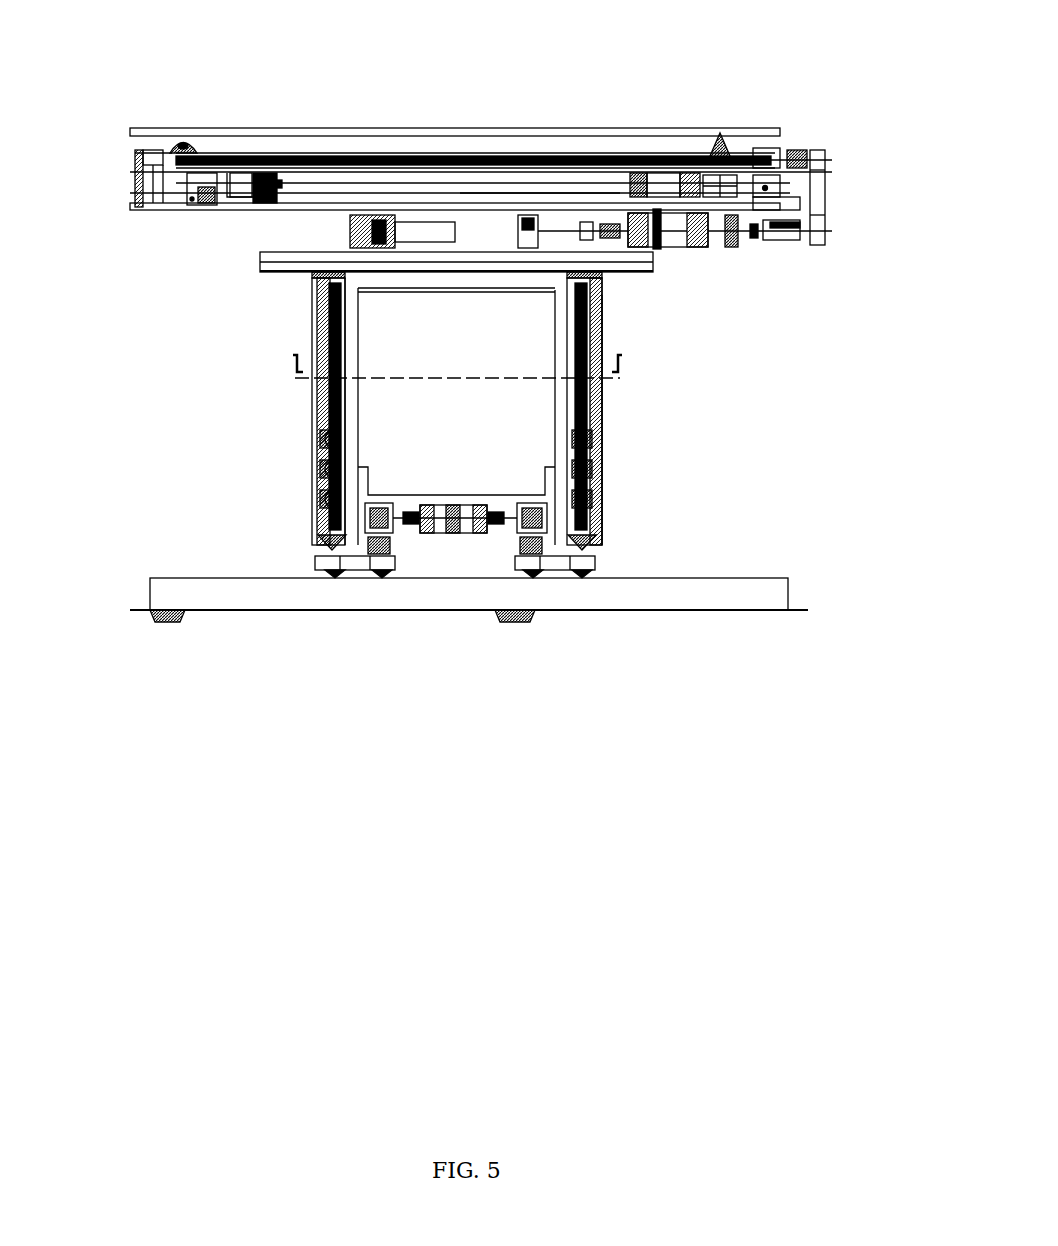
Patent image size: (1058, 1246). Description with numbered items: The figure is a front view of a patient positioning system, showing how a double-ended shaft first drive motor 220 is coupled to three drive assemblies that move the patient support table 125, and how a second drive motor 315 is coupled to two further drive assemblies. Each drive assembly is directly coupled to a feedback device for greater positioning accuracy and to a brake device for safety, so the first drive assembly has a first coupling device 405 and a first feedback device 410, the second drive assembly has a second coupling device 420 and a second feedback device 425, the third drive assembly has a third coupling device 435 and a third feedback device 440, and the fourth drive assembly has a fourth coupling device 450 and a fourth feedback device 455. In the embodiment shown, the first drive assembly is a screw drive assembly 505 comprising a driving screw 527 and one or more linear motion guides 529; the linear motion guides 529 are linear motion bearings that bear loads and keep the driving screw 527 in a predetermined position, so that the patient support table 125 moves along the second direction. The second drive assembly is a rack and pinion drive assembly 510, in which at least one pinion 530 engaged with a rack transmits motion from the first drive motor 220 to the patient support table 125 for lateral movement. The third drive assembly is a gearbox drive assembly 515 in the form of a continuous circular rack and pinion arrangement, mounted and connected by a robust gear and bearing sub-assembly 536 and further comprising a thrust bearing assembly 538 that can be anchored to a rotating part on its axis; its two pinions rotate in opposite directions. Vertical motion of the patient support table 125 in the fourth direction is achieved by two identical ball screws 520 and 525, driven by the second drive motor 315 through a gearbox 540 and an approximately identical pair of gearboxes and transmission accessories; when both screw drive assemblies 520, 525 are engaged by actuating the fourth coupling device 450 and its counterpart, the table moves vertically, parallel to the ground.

The patient support table 125 is at (153, 127).
The first drive motor 220 is at (772, 285).
The second drive motor 315 is at (357, 498).
The first coupling device 405 is at (814, 155).
The first feedback device 410 is at (127, 168).
The second coupling device 420 is at (812, 260).
The second feedback device 425 is at (173, 212).
The third coupling device 435 is at (645, 282).
The third feedback device 440 is at (256, 275).
The fourth coupling device 450 is at (600, 532).
The fourth feedback device 455 is at (286, 313).
The screw drive assembly 505 is at (310, 157).
The rack and pinion drive assembly 510 is at (457, 193).
The gearbox drive assembly 515 is at (455, 228).
The ball screw 520 is at (385, 546).
The ball screw 525 is at (593, 422).
The driving screw 527 is at (262, 136).
The linear motion guide 529 is at (250, 170).
The pinion 530 is at (200, 235).
The gear and bearing sub-assembly 536 is at (613, 293).
The thrust bearing assembly 538 is at (238, 411).
The gearbox 540 is at (600, 503).